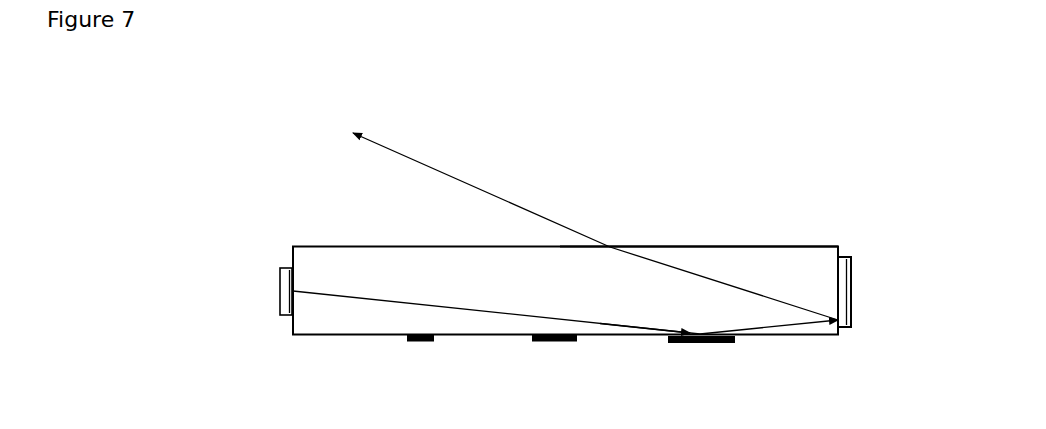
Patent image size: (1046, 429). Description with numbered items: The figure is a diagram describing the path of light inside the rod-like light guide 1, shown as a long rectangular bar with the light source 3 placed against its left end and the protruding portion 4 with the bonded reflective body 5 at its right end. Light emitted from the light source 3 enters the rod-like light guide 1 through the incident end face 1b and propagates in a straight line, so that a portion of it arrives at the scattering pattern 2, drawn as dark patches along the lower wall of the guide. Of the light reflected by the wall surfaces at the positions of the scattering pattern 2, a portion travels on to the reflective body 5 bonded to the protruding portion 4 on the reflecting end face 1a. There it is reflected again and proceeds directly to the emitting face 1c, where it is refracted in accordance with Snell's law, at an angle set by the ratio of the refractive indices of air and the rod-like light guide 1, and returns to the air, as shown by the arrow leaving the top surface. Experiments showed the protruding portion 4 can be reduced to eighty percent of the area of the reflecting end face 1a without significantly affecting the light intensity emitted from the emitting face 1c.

The rod-like light guide 1 is at (689, 243).
The reflecting end face 1a is at (848, 254).
The incident end face 1b is at (294, 250).
The emitting face 1c is at (774, 246).
The scattering pattern 2 is at (415, 342).
The light source 3 is at (284, 290).
The protruding portion 4 is at (848, 257).
The reflective body 5 is at (853, 288).